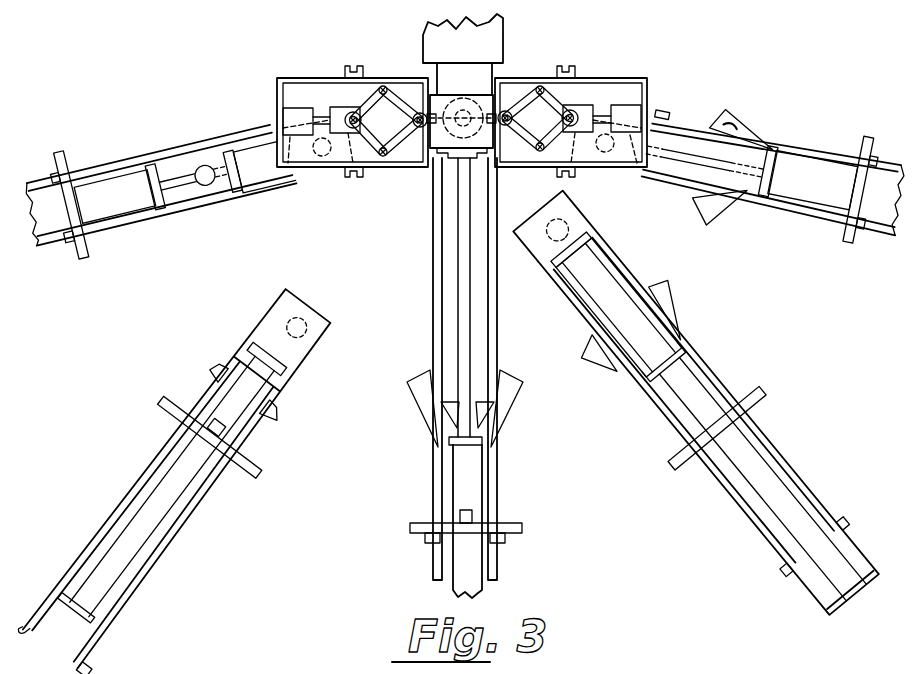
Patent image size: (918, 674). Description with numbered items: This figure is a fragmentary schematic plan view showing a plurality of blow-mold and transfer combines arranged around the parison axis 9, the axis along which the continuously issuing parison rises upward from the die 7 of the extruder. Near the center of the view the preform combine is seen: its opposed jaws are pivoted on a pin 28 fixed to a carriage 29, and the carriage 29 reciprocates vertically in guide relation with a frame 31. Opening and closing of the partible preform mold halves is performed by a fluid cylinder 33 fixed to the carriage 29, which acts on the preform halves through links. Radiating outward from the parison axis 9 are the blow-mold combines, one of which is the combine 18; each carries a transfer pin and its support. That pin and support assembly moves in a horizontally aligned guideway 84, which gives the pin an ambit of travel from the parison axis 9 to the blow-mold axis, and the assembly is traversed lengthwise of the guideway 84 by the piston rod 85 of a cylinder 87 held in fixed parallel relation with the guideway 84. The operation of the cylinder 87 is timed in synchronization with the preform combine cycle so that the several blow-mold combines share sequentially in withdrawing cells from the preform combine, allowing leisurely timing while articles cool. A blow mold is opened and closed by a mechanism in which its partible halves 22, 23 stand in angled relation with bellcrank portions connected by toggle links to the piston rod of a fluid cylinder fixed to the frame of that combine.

The die 7 is at (437, 74).
The blow-mold combine 18 is at (508, 38).
The parison axis 9 is at (475, 110).
The partible half 22 is at (507, 412).
The partible half 23 is at (413, 395).
The pin 28 is at (415, 162).
The carriage 29 is at (275, 99).
The frame 31 is at (645, 77).
The fluid cylinder 33 is at (650, 92).
The guideway 84 is at (432, 297).
The piston rod 85 is at (497, 302).
The cylinder 87 is at (127, 533).